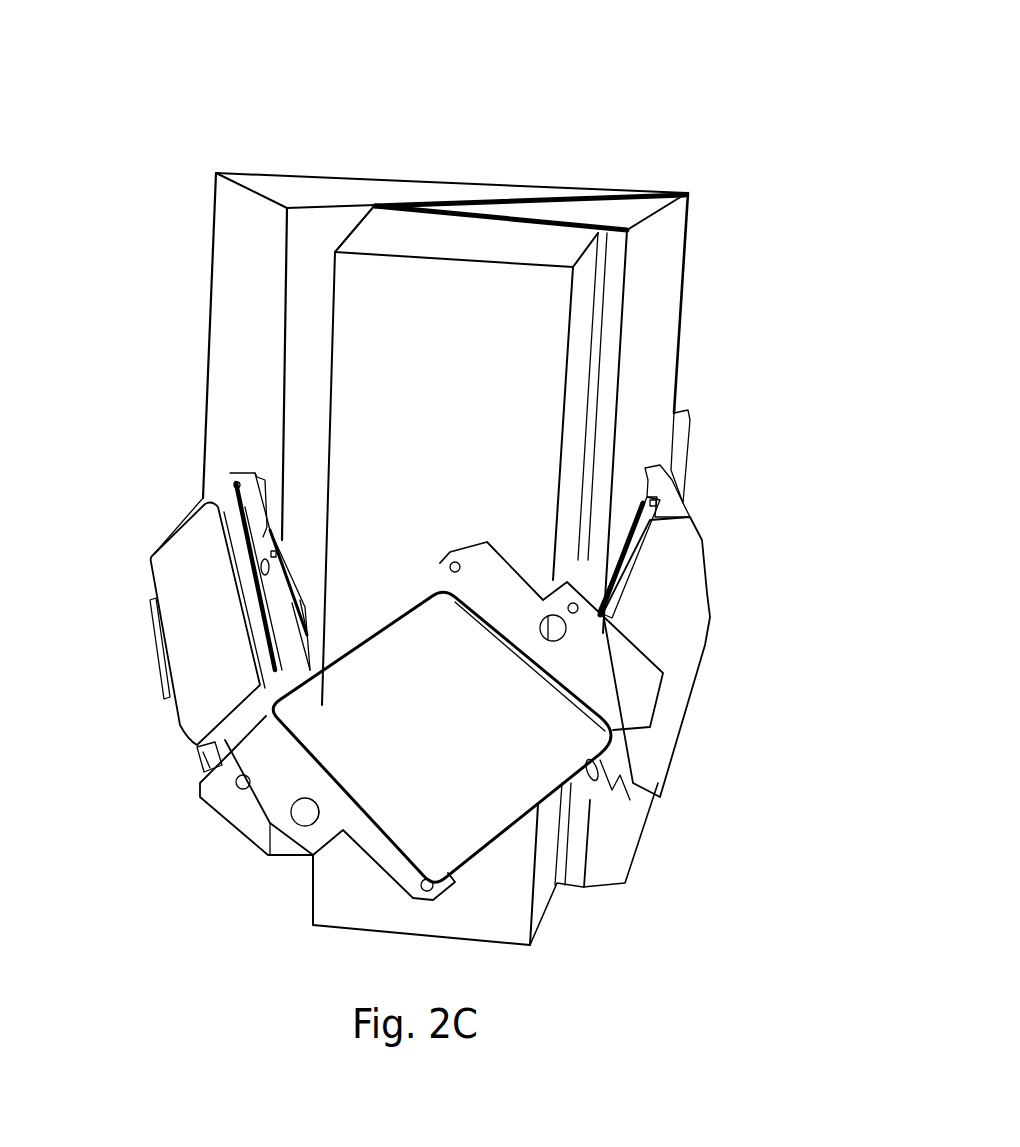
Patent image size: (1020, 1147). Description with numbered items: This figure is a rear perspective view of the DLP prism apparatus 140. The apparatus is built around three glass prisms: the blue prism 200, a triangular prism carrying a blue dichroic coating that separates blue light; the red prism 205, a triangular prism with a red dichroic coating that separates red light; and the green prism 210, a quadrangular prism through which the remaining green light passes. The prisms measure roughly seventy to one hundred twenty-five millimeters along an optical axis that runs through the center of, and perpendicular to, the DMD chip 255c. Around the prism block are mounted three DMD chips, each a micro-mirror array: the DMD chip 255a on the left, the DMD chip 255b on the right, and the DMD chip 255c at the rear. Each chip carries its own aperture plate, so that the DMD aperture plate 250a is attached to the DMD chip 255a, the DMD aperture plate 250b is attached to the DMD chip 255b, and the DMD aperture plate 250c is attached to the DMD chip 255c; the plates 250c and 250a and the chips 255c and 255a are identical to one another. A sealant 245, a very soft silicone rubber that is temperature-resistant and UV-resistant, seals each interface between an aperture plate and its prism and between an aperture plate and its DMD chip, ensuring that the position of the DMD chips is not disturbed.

The DLP prism apparatus 140 is at (143, 74).
The blue prism 200 is at (287, 207).
The green prism 210 is at (453, 220).
The red prism 205 is at (740, 150).
The sealant 245 is at (640, 530).
The DMD aperture plate 250a is at (235, 470).
The DMD aperture plate 250b is at (770, 478).
The DMD aperture plate 250c is at (297, 840).
The DMD chip 255a is at (157, 555).
The DMD chip 255b is at (677, 640).
The DMD chip 255c is at (445, 835).